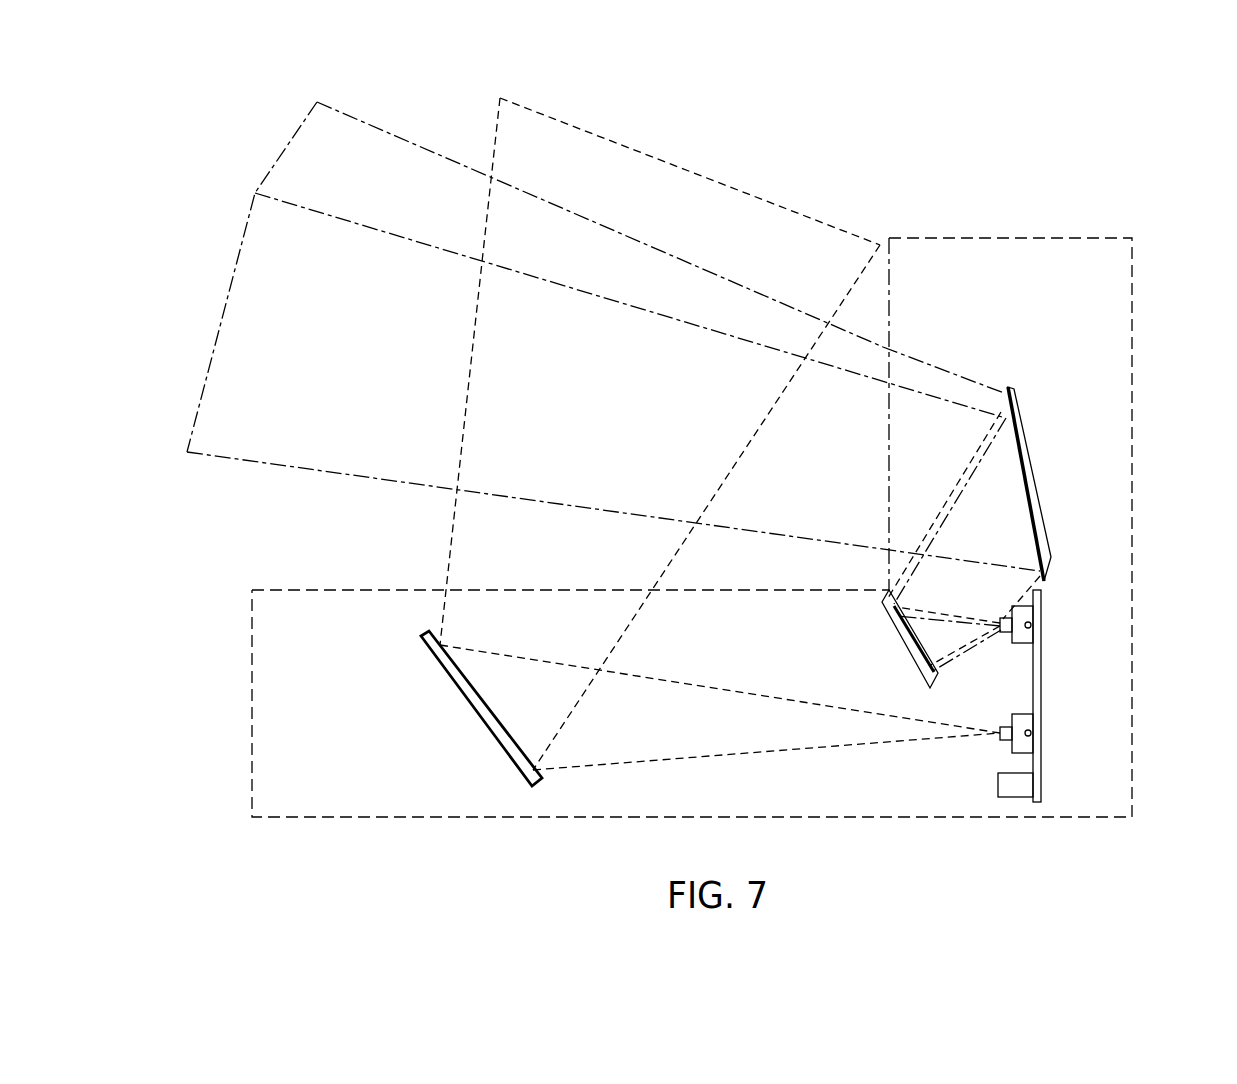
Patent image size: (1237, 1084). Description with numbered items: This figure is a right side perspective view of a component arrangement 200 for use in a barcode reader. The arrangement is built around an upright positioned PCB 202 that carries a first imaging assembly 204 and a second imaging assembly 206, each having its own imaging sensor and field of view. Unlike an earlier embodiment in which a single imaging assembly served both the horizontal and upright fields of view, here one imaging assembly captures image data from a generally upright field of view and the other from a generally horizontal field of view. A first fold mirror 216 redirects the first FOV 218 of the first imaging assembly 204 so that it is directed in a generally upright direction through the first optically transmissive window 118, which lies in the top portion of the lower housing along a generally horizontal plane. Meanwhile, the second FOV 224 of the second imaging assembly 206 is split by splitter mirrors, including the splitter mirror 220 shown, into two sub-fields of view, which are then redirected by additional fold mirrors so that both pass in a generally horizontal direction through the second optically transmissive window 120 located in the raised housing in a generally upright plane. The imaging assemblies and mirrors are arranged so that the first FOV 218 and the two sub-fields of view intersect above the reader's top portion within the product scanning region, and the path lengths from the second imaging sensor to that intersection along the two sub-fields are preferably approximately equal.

The first optically transmissive window 118 is at (630, 589).
The second optically transmissive window 120 is at (892, 445).
The component arrangement 200 is at (1144, 241).
The PCB 202 is at (1037, 690).
The first imaging assembly 204 is at (1030, 748).
The second imaging assembly 206 is at (1030, 636).
The first fold mirror 216 is at (477, 712).
The first FOV 218 is at (815, 747).
The splitter mirror 220 is at (893, 632).
The second FOV 224 is at (964, 648).